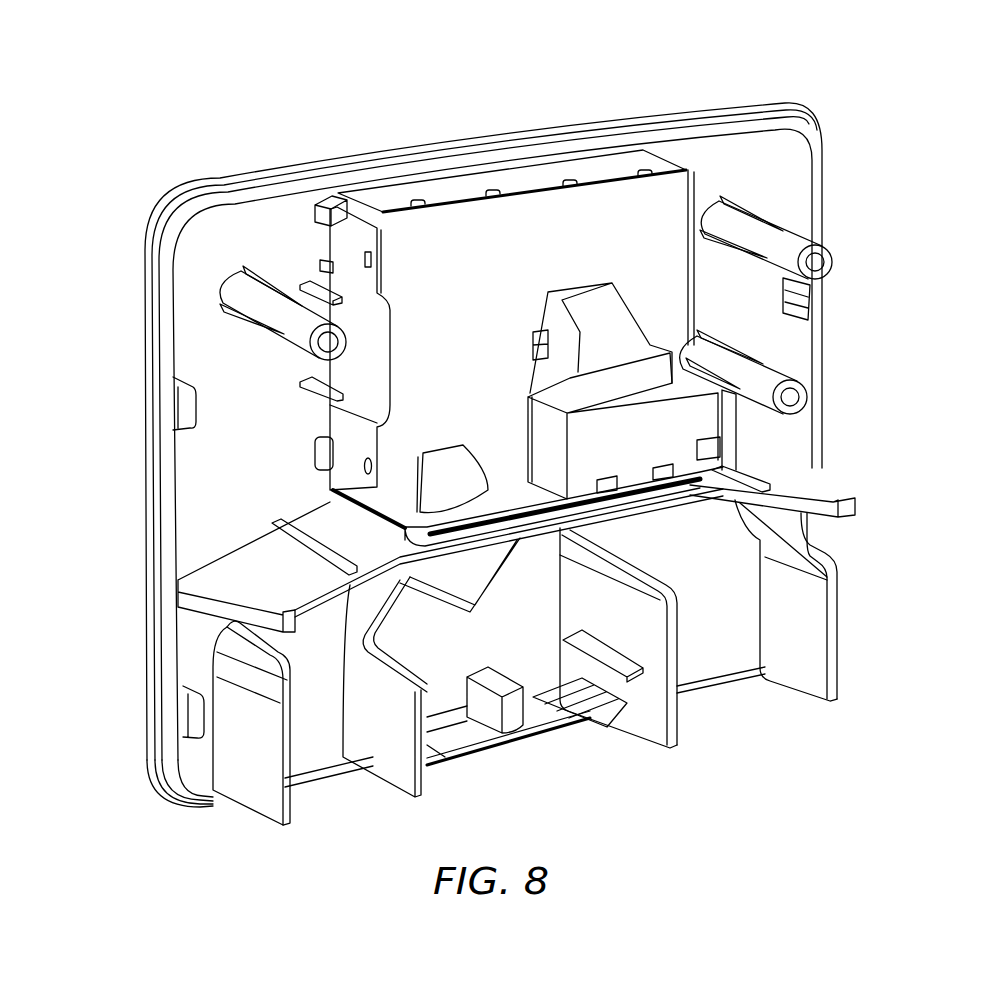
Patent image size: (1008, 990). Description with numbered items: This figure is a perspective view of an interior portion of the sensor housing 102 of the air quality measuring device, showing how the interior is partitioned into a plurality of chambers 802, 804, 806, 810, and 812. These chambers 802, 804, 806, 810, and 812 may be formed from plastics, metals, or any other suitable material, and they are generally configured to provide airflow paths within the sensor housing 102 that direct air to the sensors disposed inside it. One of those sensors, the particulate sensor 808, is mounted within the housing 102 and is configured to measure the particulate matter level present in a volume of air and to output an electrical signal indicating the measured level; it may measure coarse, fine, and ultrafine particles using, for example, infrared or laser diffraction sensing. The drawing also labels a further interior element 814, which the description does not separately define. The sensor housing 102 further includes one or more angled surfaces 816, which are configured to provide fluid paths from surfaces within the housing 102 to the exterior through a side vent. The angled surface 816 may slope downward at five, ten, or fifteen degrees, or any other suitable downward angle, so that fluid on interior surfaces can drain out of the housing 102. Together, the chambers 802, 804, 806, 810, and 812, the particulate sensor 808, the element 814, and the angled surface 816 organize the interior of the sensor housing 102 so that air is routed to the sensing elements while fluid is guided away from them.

The sensor housing 102 is at (126, 118).
The chamber 802 is at (312, 762).
The chamber 804 is at (520, 653).
The chamber 806 is at (448, 218).
The particulate sensor 808 is at (592, 265).
The chamber 810 is at (720, 627).
The chamber 812 is at (243, 223).
The post 814 is at (450, 472).
The angled surface 816 is at (217, 583).